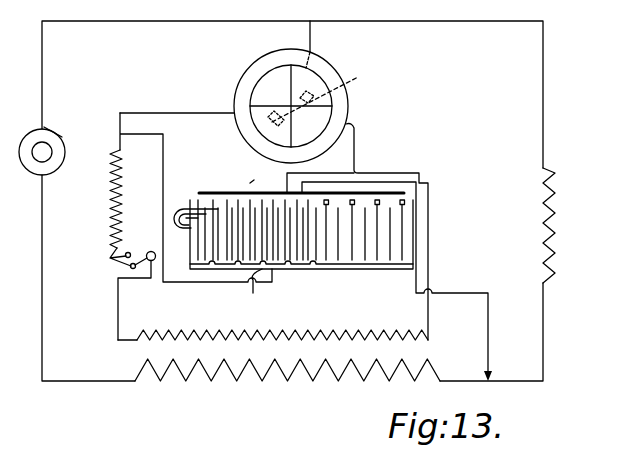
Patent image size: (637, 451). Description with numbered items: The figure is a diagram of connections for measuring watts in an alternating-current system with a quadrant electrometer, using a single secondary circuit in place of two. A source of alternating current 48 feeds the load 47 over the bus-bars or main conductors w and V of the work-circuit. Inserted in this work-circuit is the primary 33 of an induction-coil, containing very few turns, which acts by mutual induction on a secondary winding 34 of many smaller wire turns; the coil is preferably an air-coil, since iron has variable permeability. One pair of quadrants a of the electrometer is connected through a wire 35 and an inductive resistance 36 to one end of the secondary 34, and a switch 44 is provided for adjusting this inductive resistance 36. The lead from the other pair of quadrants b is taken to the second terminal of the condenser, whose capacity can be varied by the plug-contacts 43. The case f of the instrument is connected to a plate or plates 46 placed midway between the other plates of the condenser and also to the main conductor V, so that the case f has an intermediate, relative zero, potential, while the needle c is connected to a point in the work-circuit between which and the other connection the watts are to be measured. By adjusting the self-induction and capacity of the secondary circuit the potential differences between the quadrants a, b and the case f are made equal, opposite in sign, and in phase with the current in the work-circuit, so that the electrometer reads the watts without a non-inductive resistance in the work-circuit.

The primary of induction-coil 33 is at (266, 384).
The secondary winding 34 is at (256, 330).
The wire 35 is at (177, 102).
The inductive resistance 36 is at (122, 200).
The plug-contacts 43 is at (405, 204).
The switch 44 is at (150, 251).
The plate or plates 46 is at (191, 208).
The load 47 is at (559, 225).
The source of alternating current 48 is at (60, 157).
The pair of quadrants a is at (268, 124).
The pair of quadrants b is at (318, 117).
The needle c is at (319, 95).
The case f is at (257, 180).
The bus-bar w is at (524, 11).
The bus-bar V is at (498, 399).